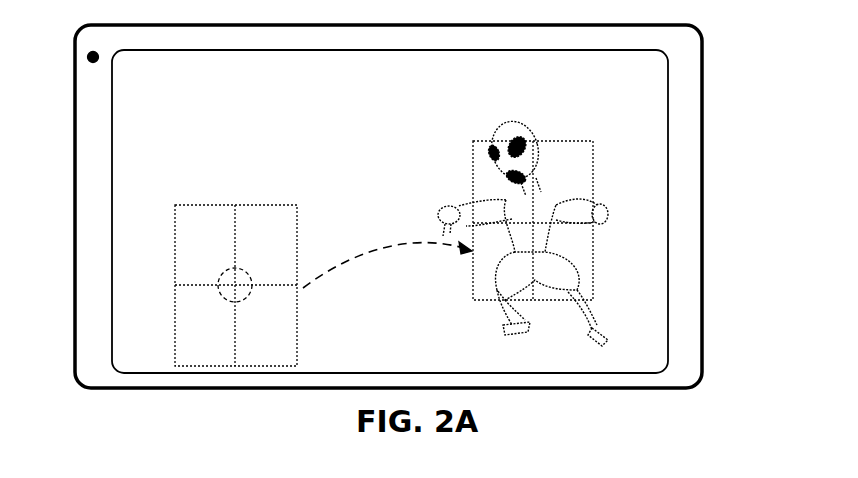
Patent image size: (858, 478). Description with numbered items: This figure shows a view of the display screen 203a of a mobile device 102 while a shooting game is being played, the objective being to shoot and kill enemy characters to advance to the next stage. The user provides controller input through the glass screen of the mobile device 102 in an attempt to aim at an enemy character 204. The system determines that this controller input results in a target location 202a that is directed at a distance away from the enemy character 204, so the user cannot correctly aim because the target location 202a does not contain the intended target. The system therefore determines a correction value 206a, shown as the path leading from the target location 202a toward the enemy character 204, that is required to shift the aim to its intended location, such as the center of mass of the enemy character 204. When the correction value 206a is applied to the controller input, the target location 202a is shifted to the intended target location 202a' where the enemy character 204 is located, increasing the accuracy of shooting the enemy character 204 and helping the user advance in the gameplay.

The mobile device 102 is at (702, 148).
The display screen 203a is at (174, 88).
The target location 202a is at (209, 268).
The correction value 206a is at (375, 241).
The intended target location 202a' is at (498, 220).
The enemy character 204 is at (498, 136).